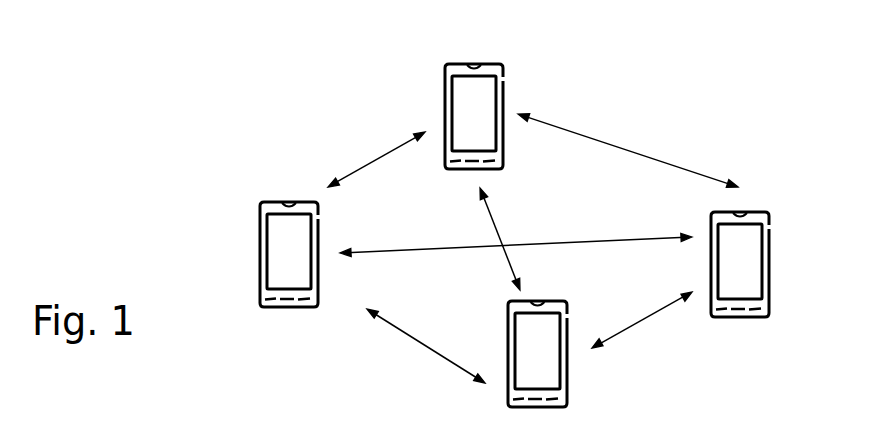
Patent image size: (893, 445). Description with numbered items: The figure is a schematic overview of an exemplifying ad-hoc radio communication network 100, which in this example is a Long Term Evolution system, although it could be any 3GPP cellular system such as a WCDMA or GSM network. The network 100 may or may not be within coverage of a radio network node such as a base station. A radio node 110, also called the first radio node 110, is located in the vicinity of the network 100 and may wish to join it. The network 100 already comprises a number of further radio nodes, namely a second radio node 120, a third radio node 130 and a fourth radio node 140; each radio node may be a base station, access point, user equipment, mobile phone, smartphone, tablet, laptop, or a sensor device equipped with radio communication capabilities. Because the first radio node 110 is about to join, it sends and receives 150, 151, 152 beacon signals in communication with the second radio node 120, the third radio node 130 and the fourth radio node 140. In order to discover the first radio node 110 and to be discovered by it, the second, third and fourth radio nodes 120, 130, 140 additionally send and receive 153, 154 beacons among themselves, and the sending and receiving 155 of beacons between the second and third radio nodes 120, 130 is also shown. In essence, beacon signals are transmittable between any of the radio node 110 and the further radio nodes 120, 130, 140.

The ad-hoc radio communication network 100 is at (262, 130).
The radio node 110 is at (289, 254).
The second radio node 120 is at (474, 116).
The third radio node 130 is at (537, 354).
The fourth radio node 140 is at (740, 264).
The sending and receiving of beacon signals 150 is at (376, 159).
The sending and receiving of beacon signals 151 is at (426, 346).
The sending and receiving of beacon signals 152 is at (516, 241).
The sending and receiving of beacons 153 is at (628, 151).
The sending and receiving of beacons 154 is at (642, 323).
The sending and receiving of beacons 155 is at (507, 239).